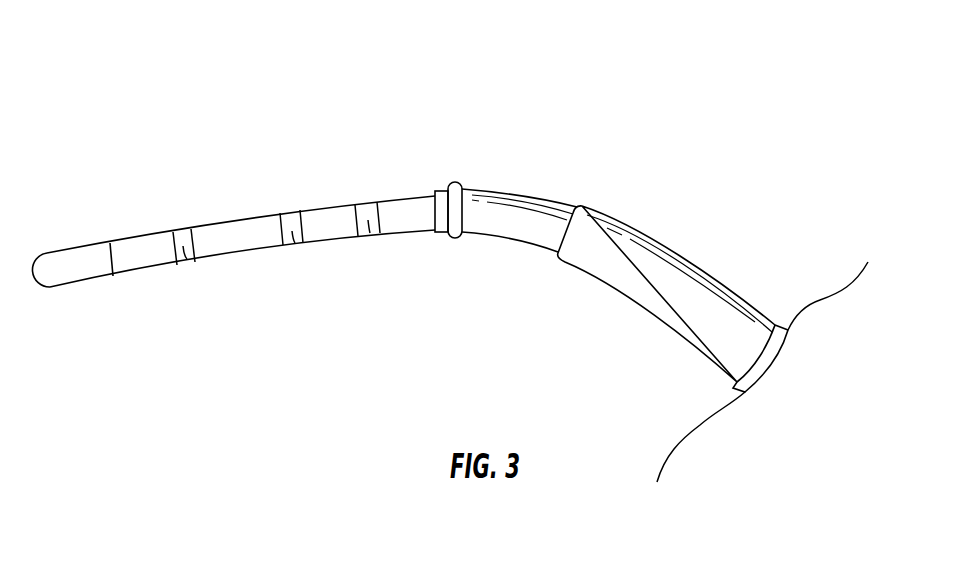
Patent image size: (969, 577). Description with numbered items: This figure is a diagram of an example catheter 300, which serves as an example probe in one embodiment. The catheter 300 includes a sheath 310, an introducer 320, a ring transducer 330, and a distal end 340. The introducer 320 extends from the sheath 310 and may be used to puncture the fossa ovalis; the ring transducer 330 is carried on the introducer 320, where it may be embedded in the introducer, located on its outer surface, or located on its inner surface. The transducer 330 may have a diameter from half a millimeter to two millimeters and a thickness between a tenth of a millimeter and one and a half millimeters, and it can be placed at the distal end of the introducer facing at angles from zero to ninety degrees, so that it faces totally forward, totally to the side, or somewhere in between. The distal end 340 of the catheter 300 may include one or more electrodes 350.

The catheter 300 is at (338, 37).
The sheath 310 is at (640, 304).
The introducer 320 is at (527, 191).
The ring transducer 330 is at (453, 184).
The distal end 340 is at (204, 226).
The electrodes 350 is at (188, 262).